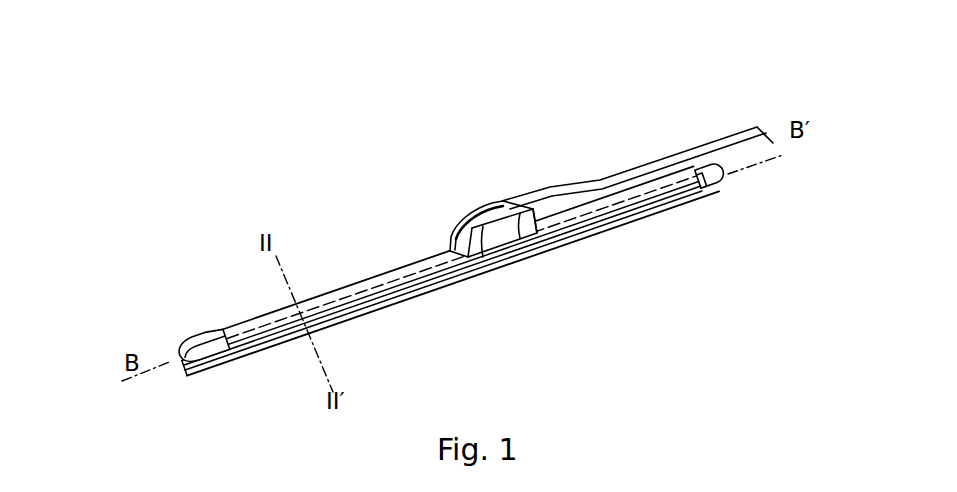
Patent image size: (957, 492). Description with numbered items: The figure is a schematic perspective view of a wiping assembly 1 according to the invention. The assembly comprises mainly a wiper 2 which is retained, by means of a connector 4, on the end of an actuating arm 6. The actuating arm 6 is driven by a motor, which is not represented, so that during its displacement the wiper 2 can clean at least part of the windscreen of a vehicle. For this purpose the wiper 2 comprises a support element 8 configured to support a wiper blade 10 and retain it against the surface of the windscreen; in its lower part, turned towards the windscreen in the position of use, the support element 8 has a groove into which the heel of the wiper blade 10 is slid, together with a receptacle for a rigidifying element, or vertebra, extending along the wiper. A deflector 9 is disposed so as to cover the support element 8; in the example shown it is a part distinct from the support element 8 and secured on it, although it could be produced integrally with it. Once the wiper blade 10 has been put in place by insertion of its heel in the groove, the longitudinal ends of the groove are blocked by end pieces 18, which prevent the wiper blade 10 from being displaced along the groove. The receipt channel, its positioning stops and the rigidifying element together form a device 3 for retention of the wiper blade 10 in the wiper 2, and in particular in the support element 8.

The wiping assembly 1 is at (451, 157).
The wiper 2 is at (378, 262).
The device for retention of the wiper blade 3 is at (203, 320).
The connector 4 is at (510, 234).
The actuating arm 6 is at (658, 166).
The support element 8 is at (388, 292).
The deflector 9 is at (240, 330).
The wiper blade 10 is at (657, 226).
The end pieces 18 is at (728, 191).